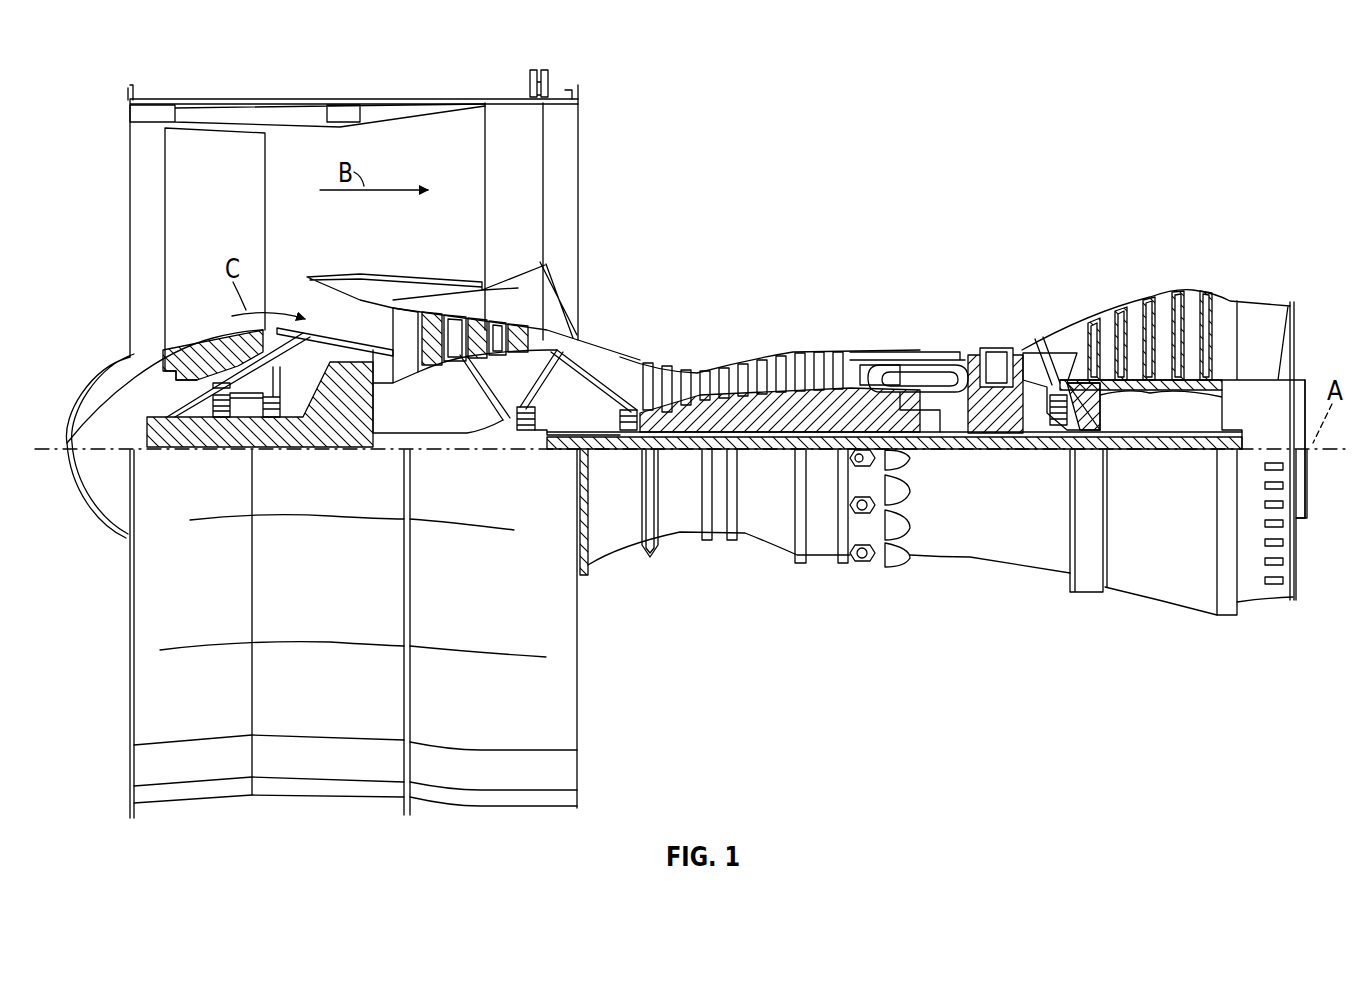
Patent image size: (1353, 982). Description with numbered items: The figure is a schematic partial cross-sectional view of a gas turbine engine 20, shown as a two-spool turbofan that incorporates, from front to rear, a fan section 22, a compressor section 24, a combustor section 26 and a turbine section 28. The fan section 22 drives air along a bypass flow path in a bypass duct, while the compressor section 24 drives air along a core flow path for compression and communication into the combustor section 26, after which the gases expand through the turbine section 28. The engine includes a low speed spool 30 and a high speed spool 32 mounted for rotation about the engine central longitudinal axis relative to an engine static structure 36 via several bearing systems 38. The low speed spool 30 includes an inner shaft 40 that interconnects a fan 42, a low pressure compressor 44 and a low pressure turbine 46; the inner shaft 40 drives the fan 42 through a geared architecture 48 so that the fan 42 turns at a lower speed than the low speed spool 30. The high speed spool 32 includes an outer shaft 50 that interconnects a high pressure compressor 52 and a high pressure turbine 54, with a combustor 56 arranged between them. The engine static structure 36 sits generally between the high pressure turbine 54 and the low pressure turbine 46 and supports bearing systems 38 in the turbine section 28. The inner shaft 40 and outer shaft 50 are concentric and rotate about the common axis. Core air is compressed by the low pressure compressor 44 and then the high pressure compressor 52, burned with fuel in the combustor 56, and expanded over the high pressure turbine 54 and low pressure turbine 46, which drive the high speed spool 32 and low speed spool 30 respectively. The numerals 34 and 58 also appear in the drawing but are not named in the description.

The gas turbine engine 20 is at (1124, 137).
The fan section 22 is at (386, 84).
The compressor section 24 is at (634, 282).
The combustor section 26 is at (902, 315).
The turbine section 28 is at (1136, 399).
The low speed spool 30 is at (788, 456).
The high speed spool 32 is at (837, 387).
The engine static structure 34 is at (1153, 400).
The engine static structure 36 is at (825, 562).
The bearing systems 38 is at (227, 418).
The inner shaft 40 is at (592, 445).
The fan 42 is at (237, 218).
The low pressure compressor 44 is at (527, 314).
The low pressure turbine 46 is at (1152, 314).
The geared architecture 48 is at (350, 423).
The outer shaft 50 is at (942, 440).
The high pressure compressor 52 is at (748, 420).
The high pressure turbine 54 is at (997, 348).
The combustor 56 is at (923, 368).
The mid-turbine frame 58 is at (1046, 340).